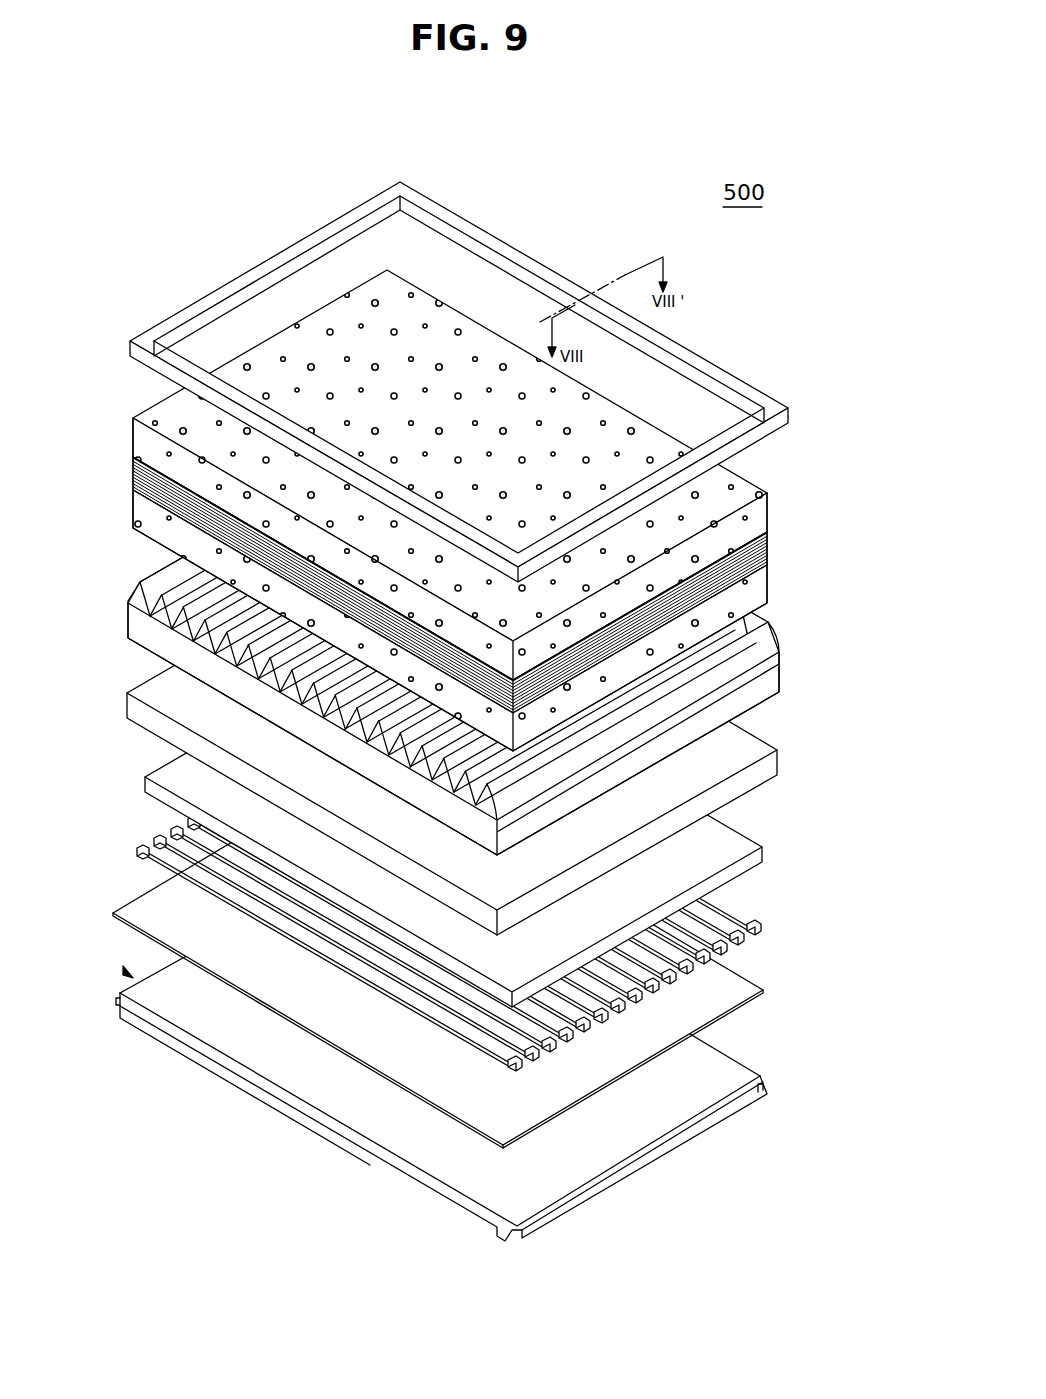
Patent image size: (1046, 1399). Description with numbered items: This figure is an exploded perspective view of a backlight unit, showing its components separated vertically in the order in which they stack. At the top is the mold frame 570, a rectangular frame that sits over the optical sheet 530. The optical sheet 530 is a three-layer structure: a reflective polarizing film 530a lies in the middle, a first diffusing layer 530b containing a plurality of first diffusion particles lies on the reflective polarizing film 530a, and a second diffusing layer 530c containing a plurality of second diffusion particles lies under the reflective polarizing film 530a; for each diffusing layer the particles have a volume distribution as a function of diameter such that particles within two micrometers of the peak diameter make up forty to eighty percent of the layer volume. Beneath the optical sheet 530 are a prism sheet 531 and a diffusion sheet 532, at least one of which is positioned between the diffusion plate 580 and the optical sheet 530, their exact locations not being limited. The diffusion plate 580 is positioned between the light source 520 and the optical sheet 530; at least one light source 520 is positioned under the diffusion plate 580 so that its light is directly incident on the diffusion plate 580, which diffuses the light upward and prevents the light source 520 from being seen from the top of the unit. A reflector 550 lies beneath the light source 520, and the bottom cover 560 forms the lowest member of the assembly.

The mold frame 570 is at (792, 411).
The optical sheet 530 is at (516, 510).
The reflective polarizing film 530a is at (780, 535).
The first diffusing layer 530b is at (780, 497).
The second diffusing layer 530c is at (780, 573).
The prism sheet 531 is at (140, 580).
The diffusion sheet 532 is at (130, 665).
The diffusion plate 580 is at (145, 745).
The light source 520 is at (150, 825).
The reflector 550 is at (150, 857).
The bottom cover 560 is at (120, 925).